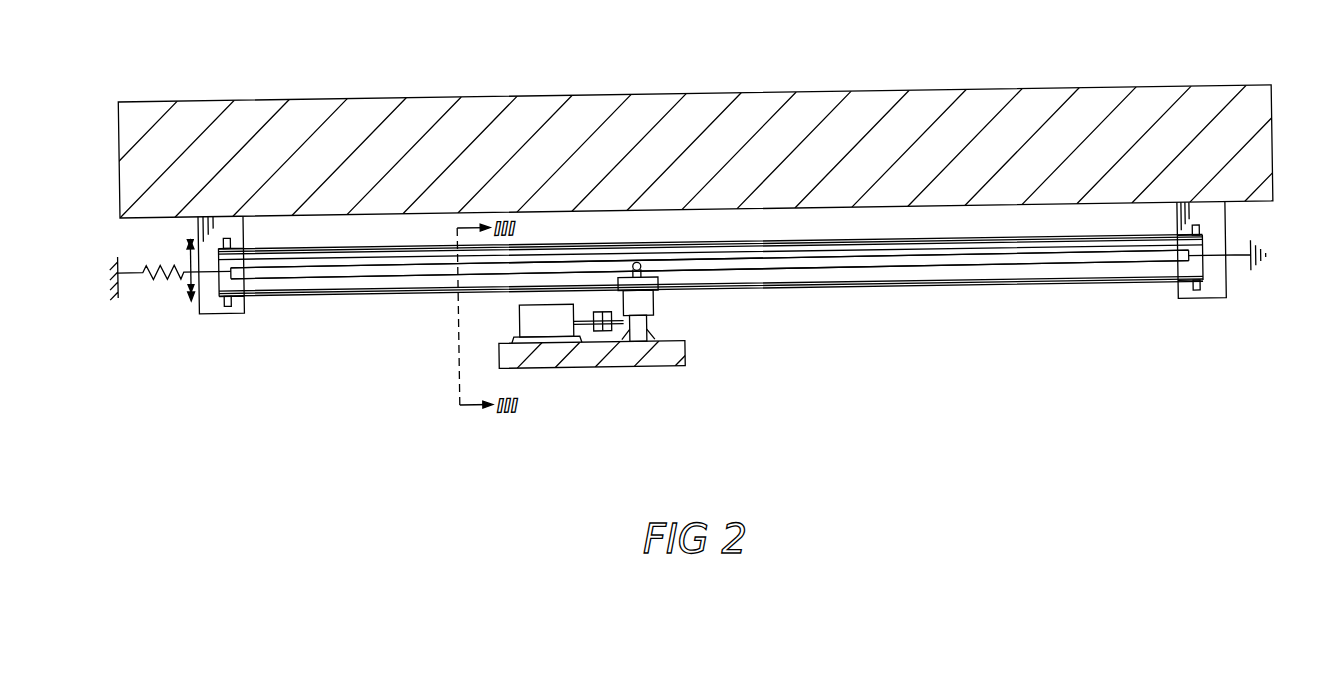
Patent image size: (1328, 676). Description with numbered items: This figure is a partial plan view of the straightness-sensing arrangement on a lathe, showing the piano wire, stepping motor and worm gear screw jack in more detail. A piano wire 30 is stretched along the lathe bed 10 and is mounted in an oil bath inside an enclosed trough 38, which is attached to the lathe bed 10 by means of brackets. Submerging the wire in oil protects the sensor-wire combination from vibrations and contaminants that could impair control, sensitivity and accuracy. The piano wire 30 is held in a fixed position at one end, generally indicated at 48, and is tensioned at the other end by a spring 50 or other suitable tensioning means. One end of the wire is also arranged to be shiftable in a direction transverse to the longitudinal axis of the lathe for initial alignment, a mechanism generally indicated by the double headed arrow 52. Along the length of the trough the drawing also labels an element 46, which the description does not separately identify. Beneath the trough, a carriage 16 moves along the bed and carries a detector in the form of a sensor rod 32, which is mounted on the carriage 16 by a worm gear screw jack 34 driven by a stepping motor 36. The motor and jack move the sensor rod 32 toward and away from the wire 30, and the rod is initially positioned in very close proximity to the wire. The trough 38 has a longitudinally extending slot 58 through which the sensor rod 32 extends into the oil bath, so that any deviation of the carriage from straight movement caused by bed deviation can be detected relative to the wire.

The lathe bed 10 is at (830, 102).
The carriage 16 is at (625, 367).
The piano wire 30 is at (408, 268).
The sensor rod 32 is at (656, 278).
The worm gear screw jack 34 is at (651, 311).
The stepping motor 36 is at (518, 327).
The trough 38 is at (342, 302).
The shaft 46 is at (863, 282).
The fixed end of the wire 48 is at (1266, 252).
The spring 50 is at (168, 292).
The double headed arrow 52 is at (193, 306).
The longitudinally extending slot 58 is at (390, 279).